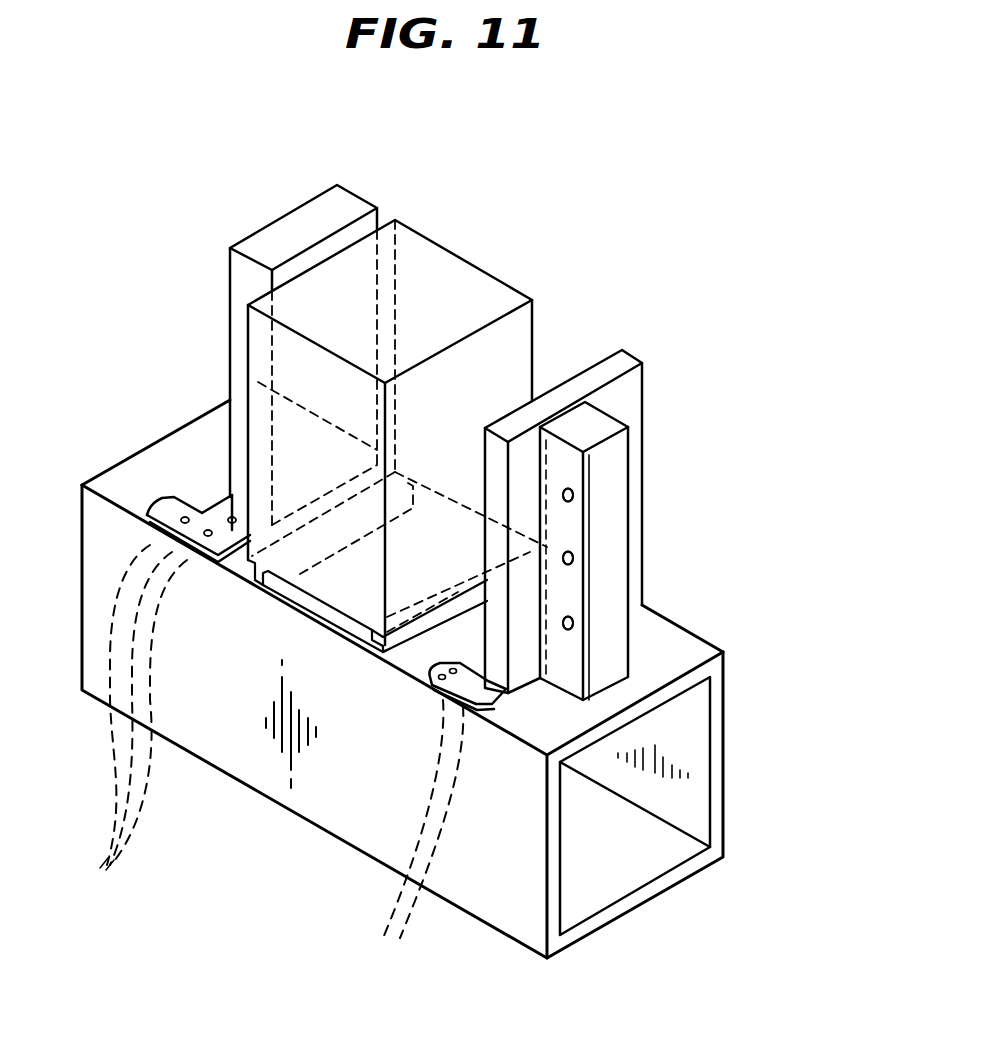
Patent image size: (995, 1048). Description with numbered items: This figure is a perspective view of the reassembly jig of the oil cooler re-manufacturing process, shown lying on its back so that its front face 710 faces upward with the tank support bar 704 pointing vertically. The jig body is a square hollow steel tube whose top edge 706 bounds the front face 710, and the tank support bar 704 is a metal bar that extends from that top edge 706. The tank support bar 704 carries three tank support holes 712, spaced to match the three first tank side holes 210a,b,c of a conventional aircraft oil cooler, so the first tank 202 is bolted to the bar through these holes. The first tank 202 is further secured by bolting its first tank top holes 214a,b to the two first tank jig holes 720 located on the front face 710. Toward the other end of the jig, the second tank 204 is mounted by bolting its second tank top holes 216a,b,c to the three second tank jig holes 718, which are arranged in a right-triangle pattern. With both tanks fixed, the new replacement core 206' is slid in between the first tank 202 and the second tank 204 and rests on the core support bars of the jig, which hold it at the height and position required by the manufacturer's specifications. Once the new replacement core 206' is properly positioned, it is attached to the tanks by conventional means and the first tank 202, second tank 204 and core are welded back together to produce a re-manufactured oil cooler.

The first tank 202 is at (523, 418).
The second tank 204 is at (273, 236).
The new replacement core 206' is at (397, 434).
The first tank side holes 210a,b,c is at (574, 626).
The first tank top holes 214a,b is at (401, 839).
The second tank top holes 216a,b,c is at (114, 727).
The tank support bar 704 is at (590, 424).
The top edge 706 is at (643, 898).
The front face 710 is at (123, 472).
The tank support holes 712 is at (676, 559).
The second tank jig holes 718 is at (167, 722).
The first tank jig holes 720 is at (434, 838).